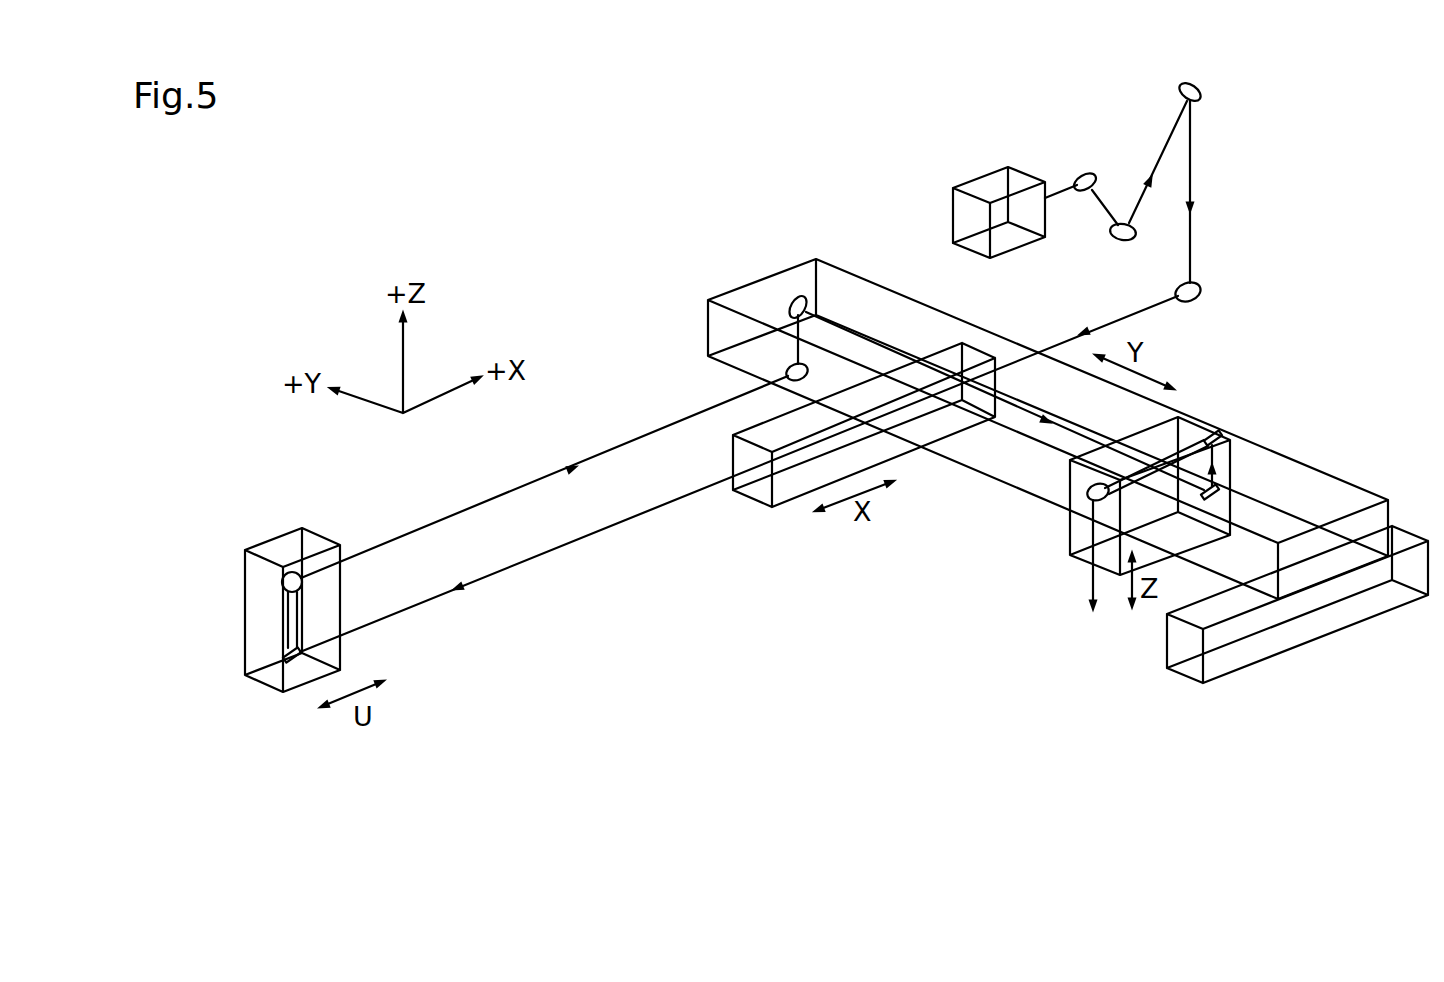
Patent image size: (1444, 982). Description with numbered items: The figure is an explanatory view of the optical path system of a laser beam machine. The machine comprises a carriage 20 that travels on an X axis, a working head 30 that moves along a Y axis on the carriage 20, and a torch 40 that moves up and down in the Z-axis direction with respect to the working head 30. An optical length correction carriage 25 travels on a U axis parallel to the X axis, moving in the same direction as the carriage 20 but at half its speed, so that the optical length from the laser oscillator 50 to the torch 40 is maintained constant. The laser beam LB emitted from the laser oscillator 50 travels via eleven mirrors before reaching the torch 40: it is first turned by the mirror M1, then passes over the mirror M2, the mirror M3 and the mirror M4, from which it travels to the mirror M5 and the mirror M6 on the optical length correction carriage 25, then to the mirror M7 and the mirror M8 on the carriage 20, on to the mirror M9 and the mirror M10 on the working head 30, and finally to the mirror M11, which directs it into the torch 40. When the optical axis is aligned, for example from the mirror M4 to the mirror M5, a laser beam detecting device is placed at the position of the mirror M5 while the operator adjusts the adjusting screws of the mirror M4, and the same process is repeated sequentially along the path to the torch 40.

The carriage 20 is at (757, 293).
The optical length correction carriage 25 is at (260, 598).
The working head 30 is at (1225, 462).
The torch 40 is at (1093, 575).
The laser oscillator 50 is at (990, 178).
The laser beam LB is at (620, 523).
The mirror M1 is at (1085, 174).
The mirror M2 is at (1118, 240).
The mirror M3 is at (1200, 93).
The mirror M4 is at (1200, 291).
The mirror M5 is at (283, 664).
The mirror M6 is at (290, 572).
The mirror M7 is at (786, 374).
The mirror M8 is at (800, 295).
The mirror M9 is at (1228, 490).
The mirror M10 is at (1214, 431).
The mirror M11 is at (1088, 496).